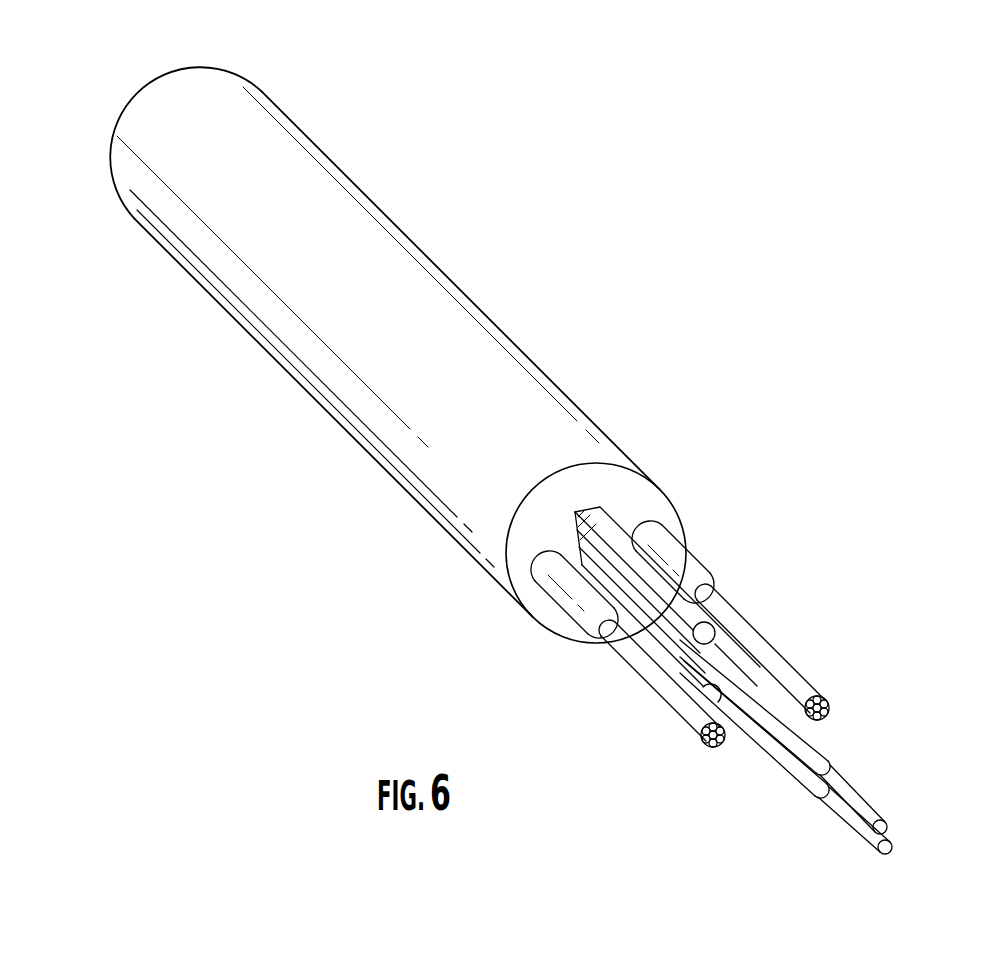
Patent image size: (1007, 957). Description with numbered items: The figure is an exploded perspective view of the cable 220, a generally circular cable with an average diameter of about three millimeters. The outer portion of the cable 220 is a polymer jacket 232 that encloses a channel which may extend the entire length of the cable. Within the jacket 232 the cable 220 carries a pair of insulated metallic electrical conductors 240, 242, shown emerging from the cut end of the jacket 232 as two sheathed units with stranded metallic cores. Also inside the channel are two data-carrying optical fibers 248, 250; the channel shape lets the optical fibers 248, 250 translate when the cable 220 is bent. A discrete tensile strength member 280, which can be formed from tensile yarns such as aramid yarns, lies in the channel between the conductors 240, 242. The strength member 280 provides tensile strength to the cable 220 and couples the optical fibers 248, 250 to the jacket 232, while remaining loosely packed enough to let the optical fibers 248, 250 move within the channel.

The cable 220 is at (398, 355).
The polymer jacket 232 is at (560, 378).
The insulated metallic electrical conductor 240 is at (572, 641).
The insulated metallic electrical conductor 242 is at (712, 557).
The optical fiber 248 is at (836, 756).
The optical fiber 250 is at (788, 777).
The tensile strength member 280 is at (617, 522).